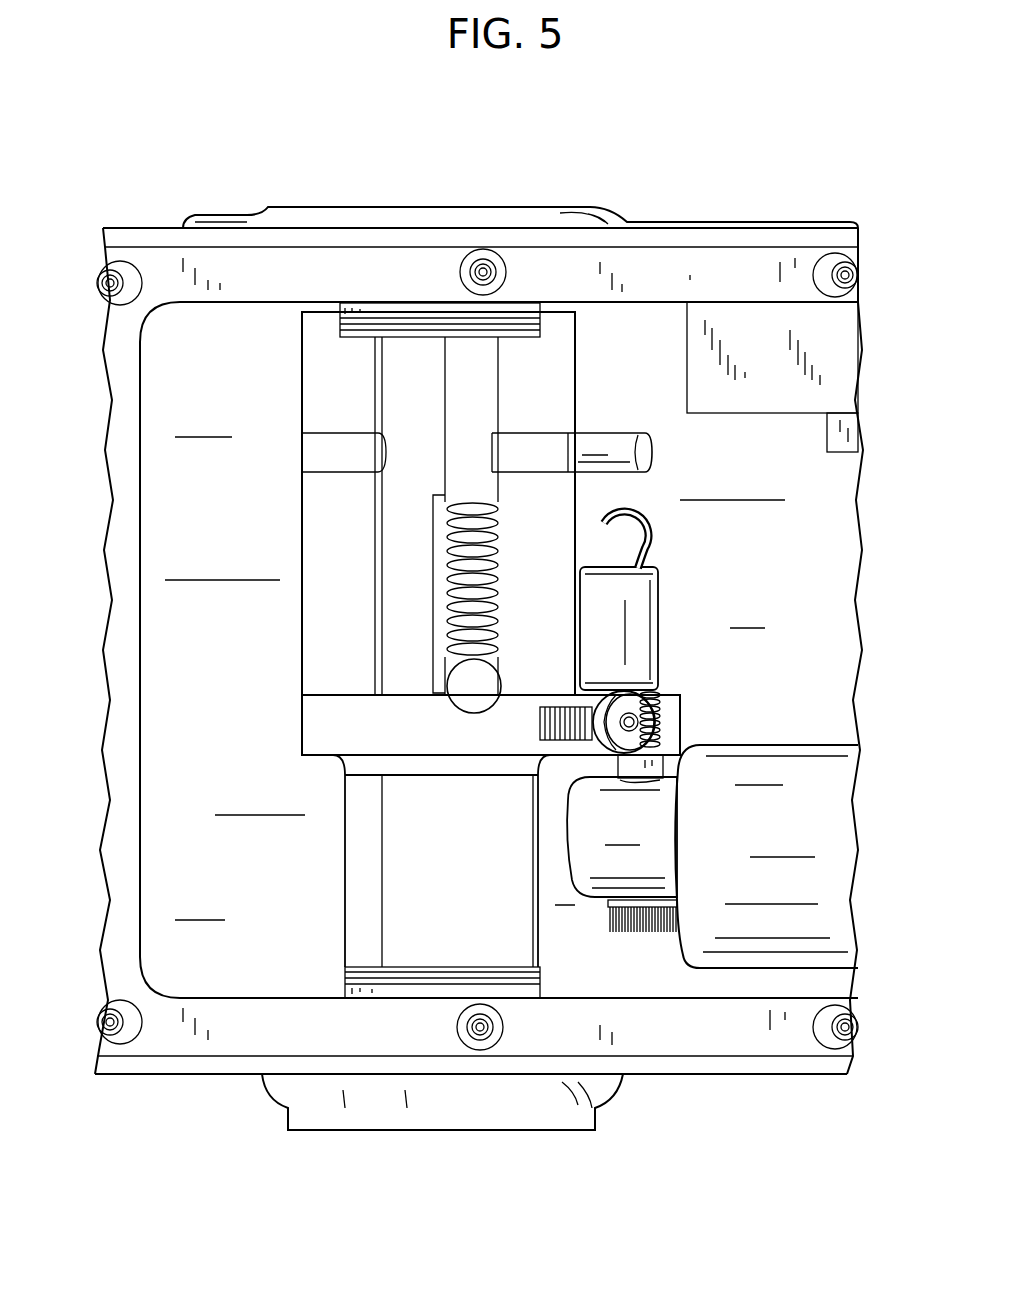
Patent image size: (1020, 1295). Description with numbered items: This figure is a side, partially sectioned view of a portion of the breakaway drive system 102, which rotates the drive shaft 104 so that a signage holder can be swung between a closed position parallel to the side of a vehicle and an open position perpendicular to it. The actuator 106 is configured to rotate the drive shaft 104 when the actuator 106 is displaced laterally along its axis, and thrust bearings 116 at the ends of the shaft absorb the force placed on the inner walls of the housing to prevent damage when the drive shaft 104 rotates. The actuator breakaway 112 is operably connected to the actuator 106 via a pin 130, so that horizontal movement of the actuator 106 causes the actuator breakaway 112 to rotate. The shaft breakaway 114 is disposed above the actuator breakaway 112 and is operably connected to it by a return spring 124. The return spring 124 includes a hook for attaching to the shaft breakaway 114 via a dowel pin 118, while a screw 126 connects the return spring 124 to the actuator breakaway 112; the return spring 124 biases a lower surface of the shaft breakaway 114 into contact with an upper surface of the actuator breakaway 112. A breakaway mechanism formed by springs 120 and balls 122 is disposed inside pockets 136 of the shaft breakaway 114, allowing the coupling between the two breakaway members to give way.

The breakaway drive system 102 is at (172, 1110).
The drive shaft 104 is at (400, 378).
The actuator 106 is at (763, 837).
The actuator breakaway 112 is at (360, 885).
The shaft breakaway 114 is at (317, 533).
The thrust bearings 116 is at (385, 317).
The dowel pin 118 is at (623, 445).
The springs 120 is at (477, 540).
The balls 122 is at (470, 707).
The return spring 124 is at (640, 617).
The screw 126 is at (657, 712).
The pin 130 is at (613, 922).
The pockets 136 is at (433, 593).